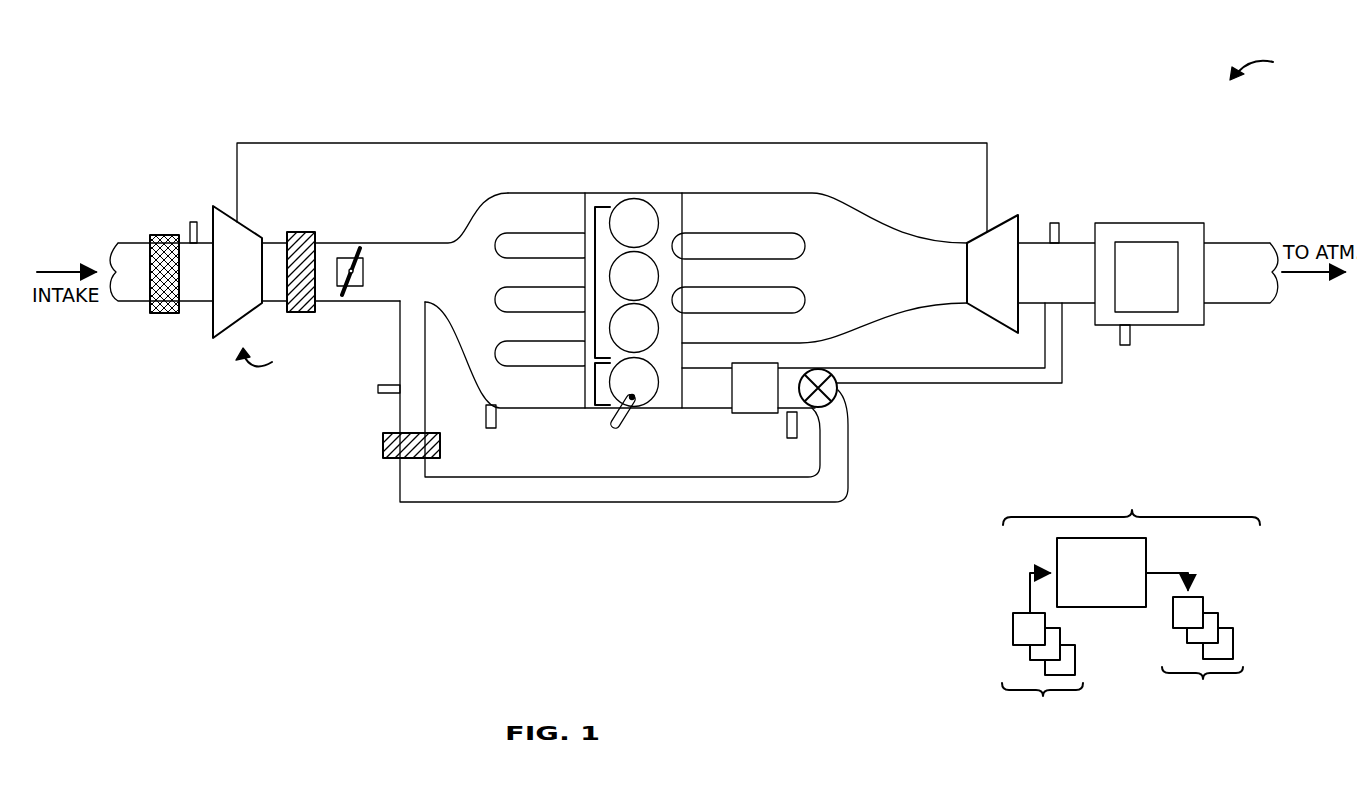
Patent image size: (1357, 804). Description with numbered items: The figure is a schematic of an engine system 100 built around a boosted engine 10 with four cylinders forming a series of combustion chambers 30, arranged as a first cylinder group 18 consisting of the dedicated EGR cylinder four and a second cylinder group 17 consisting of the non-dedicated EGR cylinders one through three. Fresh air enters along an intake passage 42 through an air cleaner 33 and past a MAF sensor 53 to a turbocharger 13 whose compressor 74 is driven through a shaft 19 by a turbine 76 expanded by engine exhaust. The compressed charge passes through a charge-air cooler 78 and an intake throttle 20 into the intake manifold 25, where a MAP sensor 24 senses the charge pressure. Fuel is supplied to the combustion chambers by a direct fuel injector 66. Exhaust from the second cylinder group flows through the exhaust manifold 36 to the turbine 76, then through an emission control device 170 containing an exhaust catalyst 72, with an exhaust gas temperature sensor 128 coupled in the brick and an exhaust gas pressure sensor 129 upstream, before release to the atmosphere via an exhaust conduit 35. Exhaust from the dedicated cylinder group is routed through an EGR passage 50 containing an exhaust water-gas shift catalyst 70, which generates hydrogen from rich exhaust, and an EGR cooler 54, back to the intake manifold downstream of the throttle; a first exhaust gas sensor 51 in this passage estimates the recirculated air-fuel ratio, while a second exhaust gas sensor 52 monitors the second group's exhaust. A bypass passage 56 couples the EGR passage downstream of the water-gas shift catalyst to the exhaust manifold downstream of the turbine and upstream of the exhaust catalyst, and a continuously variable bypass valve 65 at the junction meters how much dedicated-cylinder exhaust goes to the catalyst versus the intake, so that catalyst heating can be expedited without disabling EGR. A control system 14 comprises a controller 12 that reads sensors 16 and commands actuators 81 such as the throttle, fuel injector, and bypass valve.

The engine system 100 is at (1271, 65).
The engine 10 is at (646, 289).
The controller 12 is at (1101, 572).
The turbocharger 13 is at (266, 360).
The control system 14 is at (1131, 600).
The sensors 16 is at (1044, 676).
The second cylinder group 17 is at (602, 206).
The first cylinder group 18 is at (595, 395).
The shaft 19 is at (568, 143).
The intake throttle 20 is at (363, 280).
The manifold air pressure (MAP) sensor 24 is at (486, 427).
The intake manifold 25 is at (510, 300).
The combustion chambers 30 is at (655, 218).
The air cleaner 33 is at (166, 234).
The exhaust conduit 35 is at (1240, 243).
The exhaust manifold 36 is at (819, 300).
The intake passage 42 is at (136, 303).
The EGR passage 50 is at (653, 502).
The first exhaust gas sensor 51 is at (389, 393).
The second exhaust gas sensor 52 is at (791, 440).
The MAF sensor 53 is at (193, 222).
The EGR cooler 54 is at (392, 461).
The bypass passage 56 is at (948, 385).
The bypass valve 65 is at (840, 390).
The fuel injector 66 is at (630, 415).
The exhaust water-gas shift catalyst 70 is at (755, 388).
The exhaust catalyst 72 is at (1137, 223).
The compressor 74 is at (237, 272).
The turbine 76 is at (992, 274).
The charge-air cooler 78 is at (308, 232).
The actuators 81 is at (1209, 658).
The exhaust gas temperature sensor 128 is at (1125, 347).
The exhaust gas pressure sensor 129 is at (1055, 222).
The emission control device 170 is at (1149, 260).